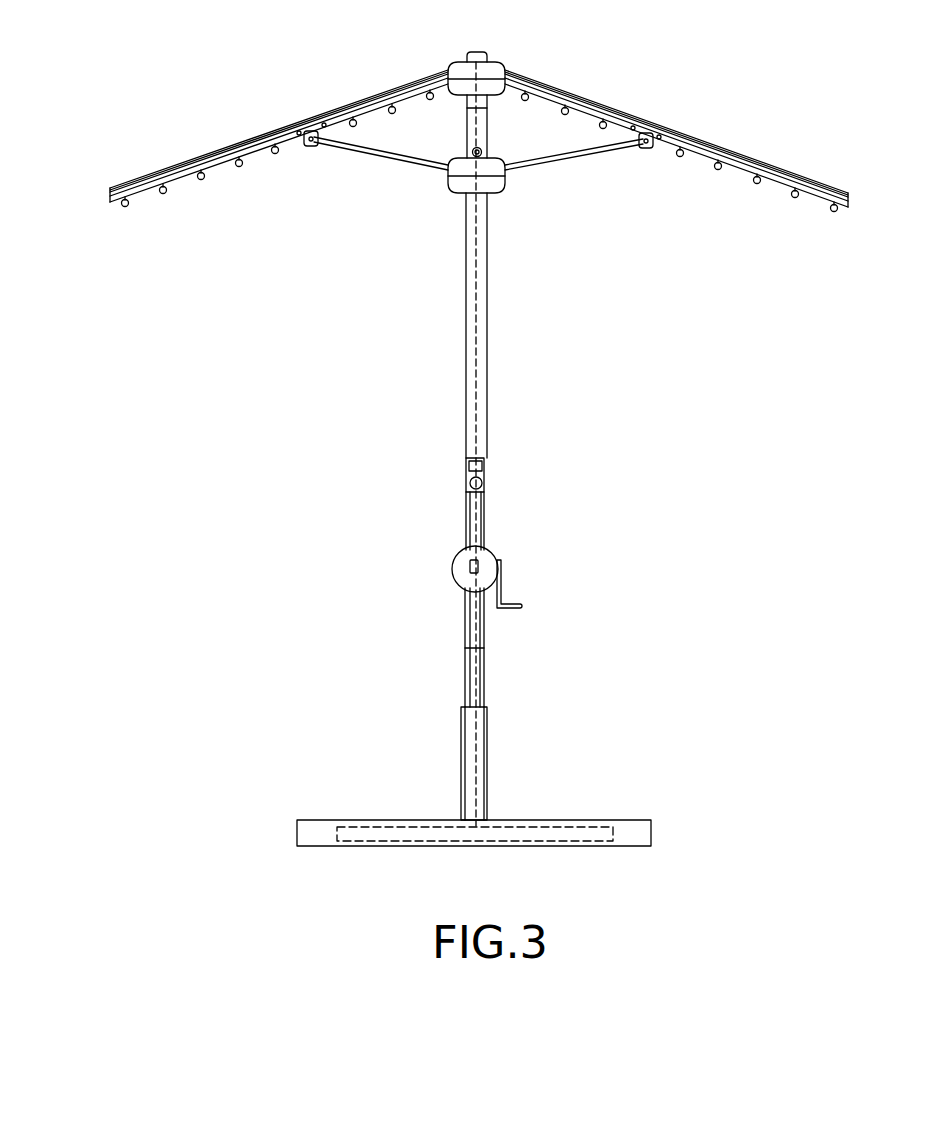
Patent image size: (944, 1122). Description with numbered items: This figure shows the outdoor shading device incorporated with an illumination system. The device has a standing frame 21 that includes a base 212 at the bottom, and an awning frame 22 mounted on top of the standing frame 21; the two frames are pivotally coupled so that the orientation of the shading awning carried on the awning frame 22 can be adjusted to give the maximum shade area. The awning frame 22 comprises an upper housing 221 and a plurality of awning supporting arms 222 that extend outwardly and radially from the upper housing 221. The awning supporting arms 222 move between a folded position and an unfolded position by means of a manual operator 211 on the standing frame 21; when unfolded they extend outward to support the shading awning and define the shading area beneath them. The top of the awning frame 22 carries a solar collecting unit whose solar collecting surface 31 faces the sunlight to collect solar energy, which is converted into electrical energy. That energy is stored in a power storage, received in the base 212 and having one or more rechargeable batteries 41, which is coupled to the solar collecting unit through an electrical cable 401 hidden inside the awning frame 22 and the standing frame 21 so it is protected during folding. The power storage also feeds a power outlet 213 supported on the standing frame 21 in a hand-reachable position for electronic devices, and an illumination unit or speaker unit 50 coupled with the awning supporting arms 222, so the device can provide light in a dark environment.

The standing frame 21 is at (439, 669).
The manual operator 211 is at (488, 571).
The base 212 is at (640, 822).
The power outlet 213 is at (487, 477).
The awning frame 22 is at (760, 272).
The upper housing 221 is at (490, 62).
The awning supporting arms 222 is at (226, 163).
The solar collecting surface 31 is at (255, 129).
The rechargeable batteries 41 is at (558, 832).
The electrical cable 401 is at (477, 292).
The illumination unit or speaker unit 50 is at (122, 211).